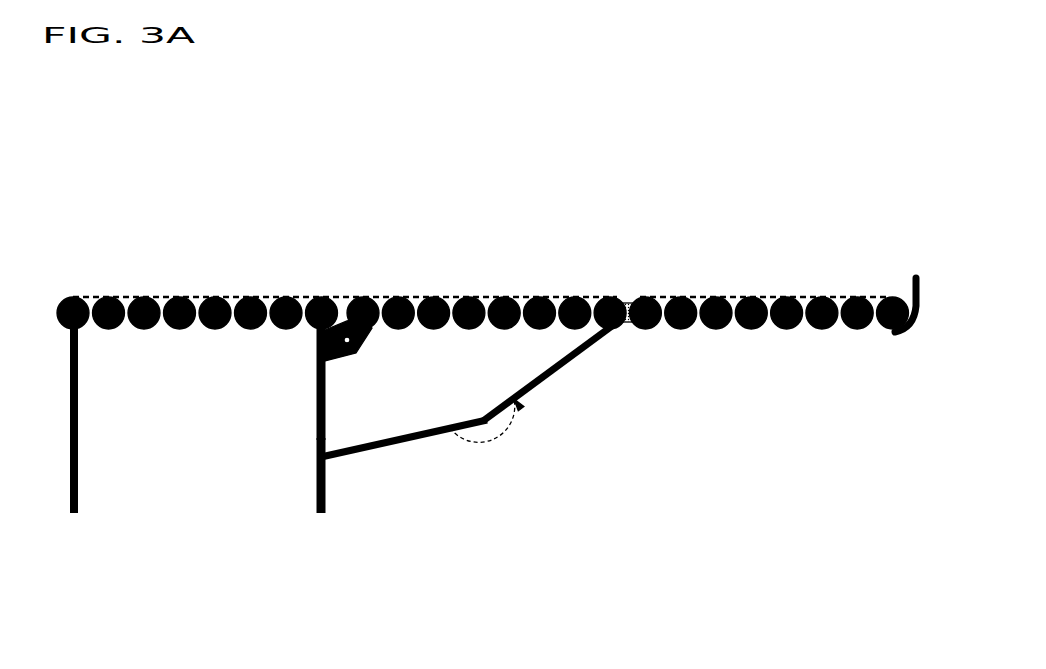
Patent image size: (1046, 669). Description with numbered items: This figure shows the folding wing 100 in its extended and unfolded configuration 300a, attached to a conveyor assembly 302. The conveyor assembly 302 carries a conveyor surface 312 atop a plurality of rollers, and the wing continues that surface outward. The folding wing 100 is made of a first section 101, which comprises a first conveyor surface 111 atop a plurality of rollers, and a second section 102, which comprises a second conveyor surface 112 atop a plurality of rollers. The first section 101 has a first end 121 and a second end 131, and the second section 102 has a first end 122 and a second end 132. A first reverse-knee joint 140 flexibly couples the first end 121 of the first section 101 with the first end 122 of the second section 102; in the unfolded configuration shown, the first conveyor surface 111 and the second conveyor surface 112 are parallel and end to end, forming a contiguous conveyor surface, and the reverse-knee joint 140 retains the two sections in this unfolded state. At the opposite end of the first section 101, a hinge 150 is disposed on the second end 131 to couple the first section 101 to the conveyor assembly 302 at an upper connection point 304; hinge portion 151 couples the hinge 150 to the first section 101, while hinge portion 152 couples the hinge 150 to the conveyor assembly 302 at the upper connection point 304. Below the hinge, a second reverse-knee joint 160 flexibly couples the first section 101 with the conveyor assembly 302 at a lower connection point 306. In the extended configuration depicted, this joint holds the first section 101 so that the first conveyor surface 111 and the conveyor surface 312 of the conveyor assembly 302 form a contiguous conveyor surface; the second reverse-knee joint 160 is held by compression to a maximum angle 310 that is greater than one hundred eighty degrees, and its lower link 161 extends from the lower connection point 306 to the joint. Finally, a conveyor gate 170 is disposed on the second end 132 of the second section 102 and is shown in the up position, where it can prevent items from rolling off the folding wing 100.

The extended and unfolded configuration 300a is at (352, 82).
The folding wing 100 is at (632, 143).
The first section 101 is at (474, 197).
The second section 102 is at (776, 197).
The first conveyor surface 111 is at (470, 295).
The second conveyor surface 112 is at (757, 295).
The first end of first section 121 is at (596, 269).
The first end of second section 122 is at (659, 269).
The second end of first section 131 is at (374, 269).
The second end of second section 132 is at (883, 271).
The first reverse-knee joint 140 is at (625, 318).
The hinge 150 is at (358, 348).
The hinge portion 151 is at (370, 333).
The hinge portion 152 is at (345, 357).
The second reverse-knee joint 160 is at (480, 418).
The second arm 161 is at (577, 358).
The conveyor gate 170 is at (917, 288).
The conveyor assembly 302 is at (259, 243).
The upper connection point 304 is at (317, 348).
The lower connection point 306 is at (317, 458).
The maximum angle 310 is at (472, 449).
The conveyor surface 312 is at (147, 295).